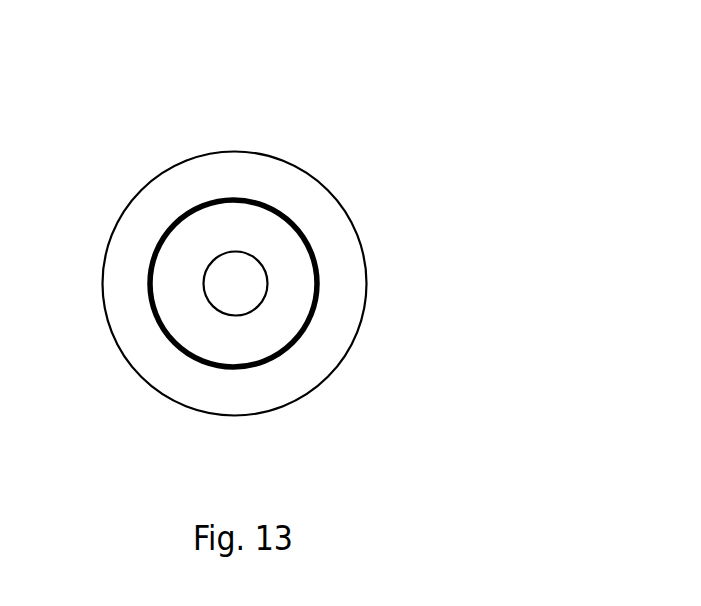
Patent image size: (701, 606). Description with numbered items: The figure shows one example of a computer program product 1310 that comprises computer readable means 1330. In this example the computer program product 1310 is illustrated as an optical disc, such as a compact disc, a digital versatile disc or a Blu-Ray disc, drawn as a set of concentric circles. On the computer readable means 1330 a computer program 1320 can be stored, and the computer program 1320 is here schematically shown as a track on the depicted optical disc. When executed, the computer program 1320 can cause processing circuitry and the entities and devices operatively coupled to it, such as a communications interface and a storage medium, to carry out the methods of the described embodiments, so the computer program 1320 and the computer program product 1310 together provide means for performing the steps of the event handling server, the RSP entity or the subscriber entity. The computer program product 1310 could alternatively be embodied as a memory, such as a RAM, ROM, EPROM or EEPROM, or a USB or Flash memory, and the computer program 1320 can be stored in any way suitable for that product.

The computer program product 1310 is at (378, 161).
The computer program 1320 is at (318, 303).
The computer readable means 1330 is at (280, 395).